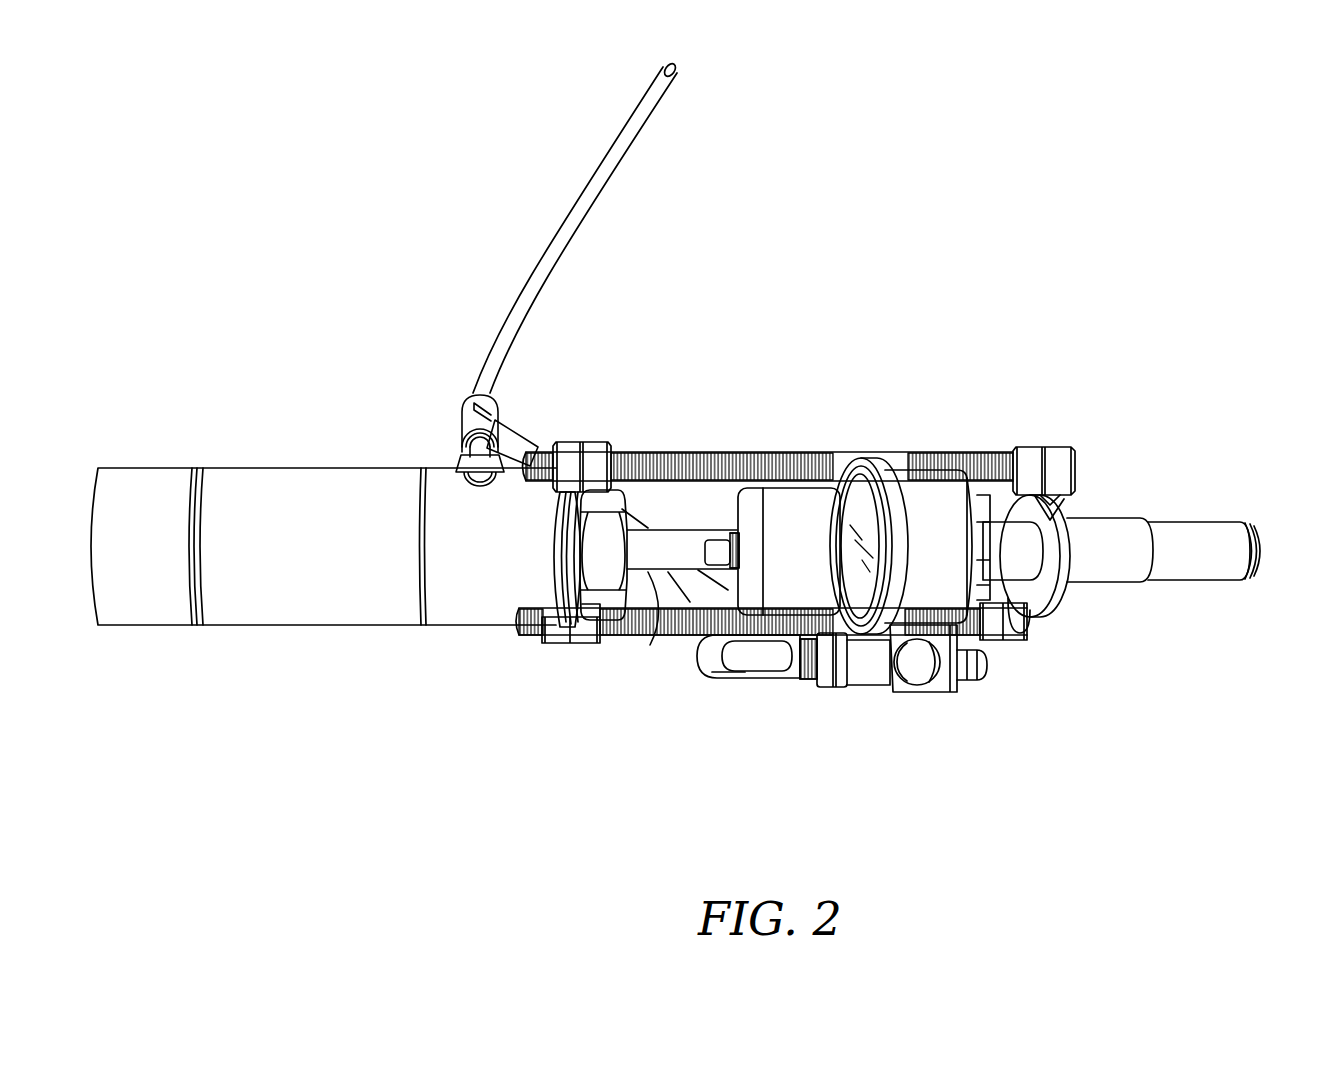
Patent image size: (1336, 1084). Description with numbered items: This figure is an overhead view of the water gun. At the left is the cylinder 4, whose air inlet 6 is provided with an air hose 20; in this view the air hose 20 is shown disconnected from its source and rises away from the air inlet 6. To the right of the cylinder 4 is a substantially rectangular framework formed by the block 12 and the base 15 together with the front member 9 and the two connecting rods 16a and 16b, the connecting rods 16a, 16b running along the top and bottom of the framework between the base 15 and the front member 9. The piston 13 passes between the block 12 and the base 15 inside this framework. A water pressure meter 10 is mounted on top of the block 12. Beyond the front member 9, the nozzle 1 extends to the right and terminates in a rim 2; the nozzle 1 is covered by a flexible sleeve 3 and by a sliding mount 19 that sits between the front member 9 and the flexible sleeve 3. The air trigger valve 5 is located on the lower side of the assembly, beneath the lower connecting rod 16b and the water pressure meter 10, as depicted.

The nozzle 1 is at (1238, 454).
The rim 2 is at (1266, 545).
The flexible sleeve 3 is at (1197, 583).
The cylinder 4 is at (278, 627).
The air trigger valve 5 is at (910, 693).
The air inlet 6 is at (461, 452).
The front member 9 is at (1056, 612).
The water pressure meter 10 is at (952, 545).
The block 12 is at (810, 556).
The piston 13 is at (668, 574).
The base 15 is at (583, 645).
The connecting rod 16a is at (757, 452).
The connecting rod 16b is at (660, 636).
The sliding mount 19 is at (1105, 518).
The air hose 20 is at (570, 212).